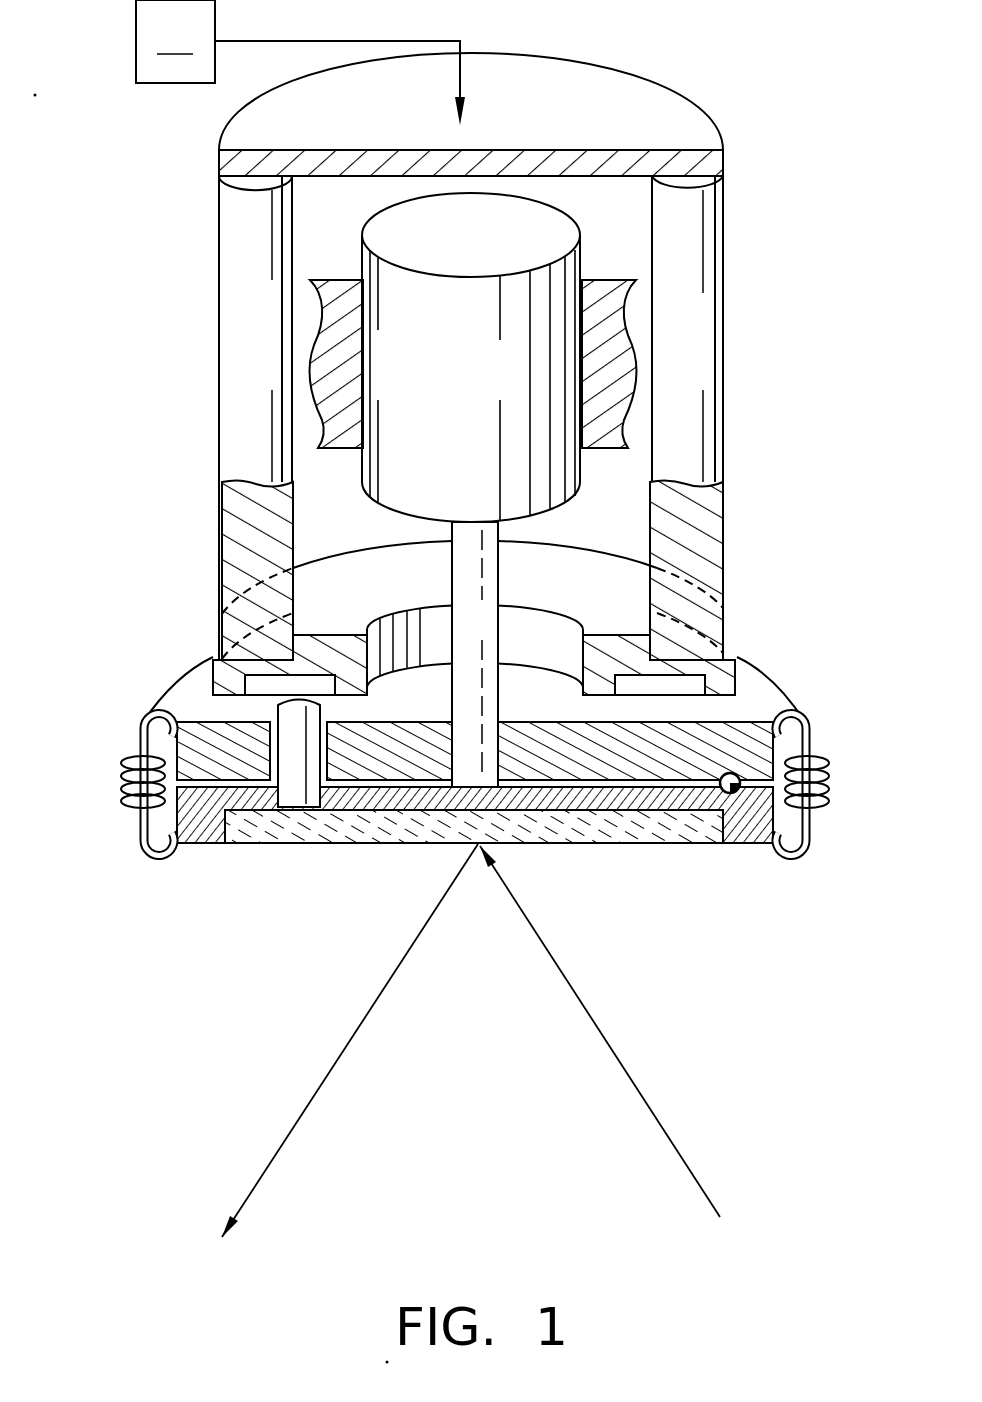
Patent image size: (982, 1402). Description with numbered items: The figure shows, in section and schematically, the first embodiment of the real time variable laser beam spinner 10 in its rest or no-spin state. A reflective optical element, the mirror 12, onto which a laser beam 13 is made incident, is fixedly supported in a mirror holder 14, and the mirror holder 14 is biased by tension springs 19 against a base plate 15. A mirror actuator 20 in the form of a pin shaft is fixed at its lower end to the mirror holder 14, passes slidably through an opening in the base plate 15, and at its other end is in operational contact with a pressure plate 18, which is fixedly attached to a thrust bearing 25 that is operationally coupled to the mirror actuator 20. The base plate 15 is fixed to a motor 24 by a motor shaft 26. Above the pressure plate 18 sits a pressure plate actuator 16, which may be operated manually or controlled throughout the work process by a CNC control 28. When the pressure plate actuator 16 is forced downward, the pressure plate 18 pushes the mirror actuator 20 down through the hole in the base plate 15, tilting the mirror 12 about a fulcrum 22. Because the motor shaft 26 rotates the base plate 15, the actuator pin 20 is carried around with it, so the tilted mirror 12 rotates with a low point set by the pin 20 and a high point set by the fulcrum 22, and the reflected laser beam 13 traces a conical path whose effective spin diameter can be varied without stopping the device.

The real time variable laser beam spinner 10 is at (753, 285).
The mirror 12 is at (653, 844).
The laser beam 13 is at (368, 1008).
The mirror holder 14 is at (745, 843).
The base plate 15 is at (757, 703).
The pressure plate actuator 16 is at (258, 357).
The pressure plate 18 is at (740, 657).
The tension springs 19 is at (121, 766).
The mirror actuator 20 is at (320, 702).
The fulcrum 22 is at (728, 776).
The motor 24 is at (470, 389).
The thrust bearing 25 is at (632, 680).
The motor shaft 26 is at (508, 625).
The CNC control 28 is at (300, 62).